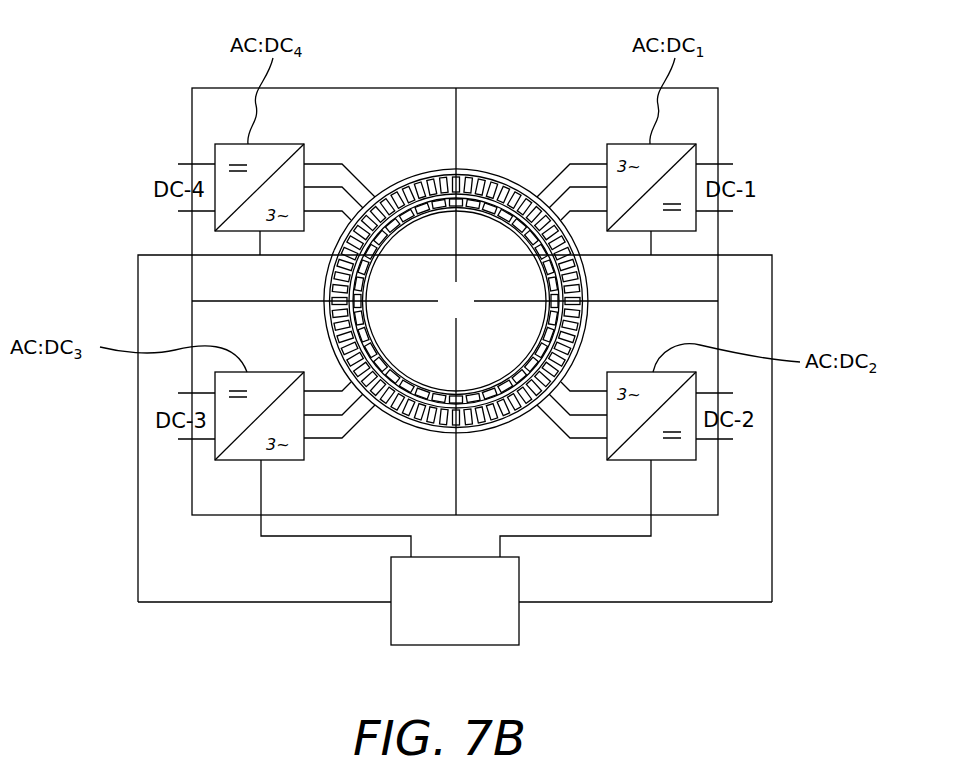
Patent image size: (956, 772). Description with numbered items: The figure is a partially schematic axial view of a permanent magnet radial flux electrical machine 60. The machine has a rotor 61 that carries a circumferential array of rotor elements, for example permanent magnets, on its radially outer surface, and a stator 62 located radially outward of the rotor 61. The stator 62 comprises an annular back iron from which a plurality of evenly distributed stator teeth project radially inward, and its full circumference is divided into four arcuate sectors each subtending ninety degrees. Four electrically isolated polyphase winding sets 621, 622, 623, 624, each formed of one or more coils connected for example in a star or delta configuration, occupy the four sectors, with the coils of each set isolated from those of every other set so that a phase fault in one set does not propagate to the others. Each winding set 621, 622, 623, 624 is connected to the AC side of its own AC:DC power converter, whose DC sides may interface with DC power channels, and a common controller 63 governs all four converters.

The permanent magnet radial flux electrical machine 60 is at (134, 82).
The rotor 61 is at (469, 313).
The stator 62 is at (409, 158).
The first polyphase winding set 621 is at (586, 282).
The second polyphase winding set 622 is at (472, 429).
The third polyphase winding set 623 is at (325, 316).
The fourth polyphase winding set 624 is at (327, 273).
The common controller 63 is at (470, 614).